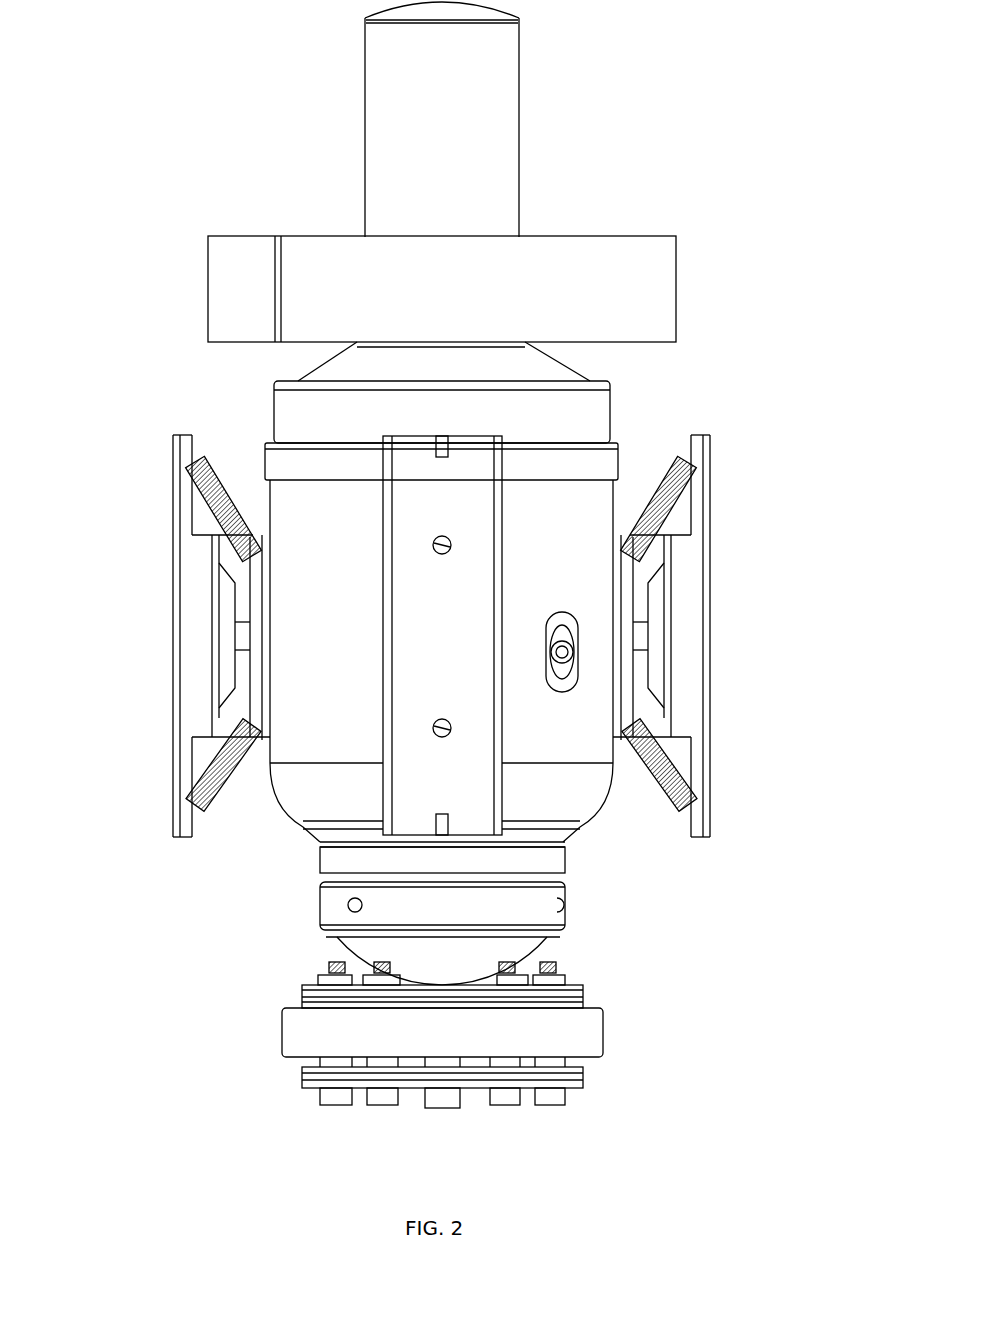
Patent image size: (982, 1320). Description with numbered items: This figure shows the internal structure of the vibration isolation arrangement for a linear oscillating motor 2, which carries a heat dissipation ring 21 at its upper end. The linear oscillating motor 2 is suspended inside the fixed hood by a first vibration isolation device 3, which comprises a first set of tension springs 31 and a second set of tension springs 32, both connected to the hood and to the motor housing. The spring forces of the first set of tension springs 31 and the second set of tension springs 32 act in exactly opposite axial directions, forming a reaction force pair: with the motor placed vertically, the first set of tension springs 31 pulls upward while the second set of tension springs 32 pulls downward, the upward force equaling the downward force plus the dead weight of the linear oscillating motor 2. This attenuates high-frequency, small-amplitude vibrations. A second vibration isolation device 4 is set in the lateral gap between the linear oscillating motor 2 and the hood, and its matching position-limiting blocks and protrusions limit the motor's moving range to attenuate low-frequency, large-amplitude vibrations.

The linear oscillating motor 2 is at (293, 847).
The heat dissipation ring 21 is at (580, 237).
The first vibration isolation device 3 is at (162, 645).
The first set of tension springs 31 is at (655, 467).
The second set of tension springs 32 is at (650, 808).
The second vibration isolation device 4 is at (653, 622).